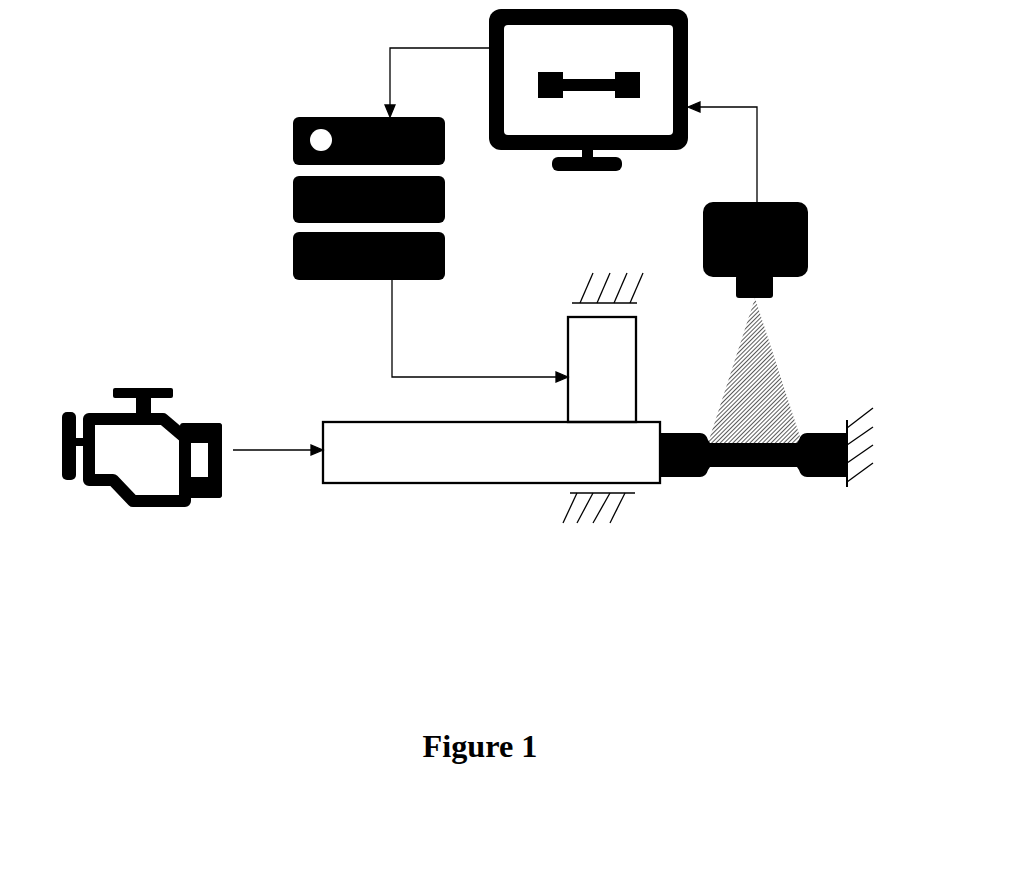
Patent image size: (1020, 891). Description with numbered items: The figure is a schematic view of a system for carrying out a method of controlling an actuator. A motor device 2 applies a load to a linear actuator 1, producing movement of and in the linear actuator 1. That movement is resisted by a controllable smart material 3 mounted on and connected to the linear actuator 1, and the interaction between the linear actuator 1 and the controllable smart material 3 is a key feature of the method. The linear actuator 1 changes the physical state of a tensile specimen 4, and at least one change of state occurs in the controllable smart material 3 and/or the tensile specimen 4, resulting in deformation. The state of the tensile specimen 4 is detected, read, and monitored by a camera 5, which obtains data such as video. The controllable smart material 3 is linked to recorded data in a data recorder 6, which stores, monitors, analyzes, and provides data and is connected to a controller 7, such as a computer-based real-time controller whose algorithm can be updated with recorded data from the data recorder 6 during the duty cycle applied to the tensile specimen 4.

The linear actuator 1 is at (363, 433).
The motor device 2 is at (118, 425).
The controllable smart material 3 is at (568, 367).
The tensile specimen 4 is at (822, 428).
The camera 5 is at (765, 202).
The data recorder 6 is at (688, 90).
The controller 7 is at (292, 120).